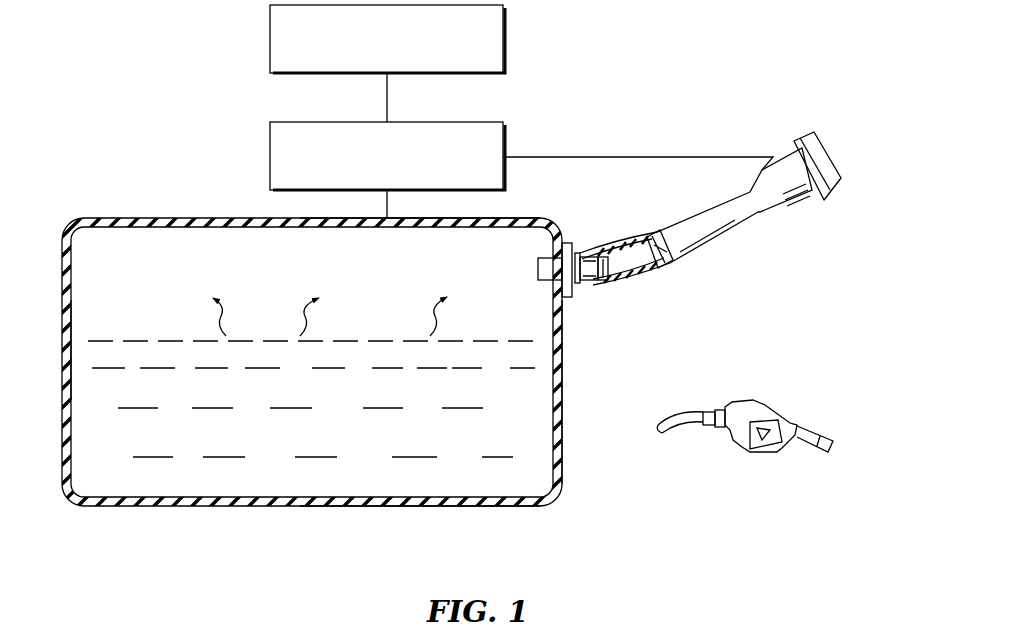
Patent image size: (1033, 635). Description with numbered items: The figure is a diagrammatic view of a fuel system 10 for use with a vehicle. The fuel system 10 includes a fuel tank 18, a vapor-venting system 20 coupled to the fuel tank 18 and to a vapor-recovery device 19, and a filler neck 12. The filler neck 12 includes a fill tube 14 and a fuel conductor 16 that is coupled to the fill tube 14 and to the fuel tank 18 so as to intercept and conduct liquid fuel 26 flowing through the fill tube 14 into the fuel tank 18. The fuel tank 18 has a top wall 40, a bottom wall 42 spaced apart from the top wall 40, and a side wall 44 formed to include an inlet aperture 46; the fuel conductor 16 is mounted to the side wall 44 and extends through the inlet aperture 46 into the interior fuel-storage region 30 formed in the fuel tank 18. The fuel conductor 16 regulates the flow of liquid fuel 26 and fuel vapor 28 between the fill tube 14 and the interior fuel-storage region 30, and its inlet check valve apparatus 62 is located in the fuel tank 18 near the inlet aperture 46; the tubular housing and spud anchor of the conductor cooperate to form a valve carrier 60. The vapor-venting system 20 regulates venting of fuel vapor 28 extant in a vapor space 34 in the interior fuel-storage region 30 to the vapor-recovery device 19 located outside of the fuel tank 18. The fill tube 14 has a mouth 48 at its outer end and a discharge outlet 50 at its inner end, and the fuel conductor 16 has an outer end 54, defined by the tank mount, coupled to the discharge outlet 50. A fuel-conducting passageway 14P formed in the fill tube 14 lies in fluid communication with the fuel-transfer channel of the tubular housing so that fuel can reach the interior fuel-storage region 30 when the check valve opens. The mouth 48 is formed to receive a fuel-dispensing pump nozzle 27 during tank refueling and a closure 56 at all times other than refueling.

The fuel system 10 is at (187, 130).
The filler neck 12 is at (680, 290).
The fill tube 14 is at (710, 186).
The fuel-conducting passageway 14P is at (678, 243).
The fuel conductor 16 is at (570, 308).
The fuel tank 18 is at (87, 216).
The vapor-recovery device 19 is at (503, 48).
The vapor-venting system 20 is at (490, 122).
The liquid fuel 26 is at (345, 340).
The fuel-dispensing pump nozzle 27 is at (741, 456).
The fuel vapor 28 is at (307, 320).
The interior fuel-storage region 30 is at (245, 284).
The vapor space 34 is at (162, 259).
The top wall 40 is at (508, 220).
The bottom wall 42 is at (511, 511).
The side wall 44 is at (565, 442).
The inlet aperture 46 is at (540, 279).
The mouth 48 is at (790, 171).
The discharge outlet 50 is at (590, 297).
The outer end 54 is at (591, 243).
The closure 56 is at (803, 124).
The valve carrier 60 is at (572, 237).
The inlet check valve apparatus 62 is at (532, 272).